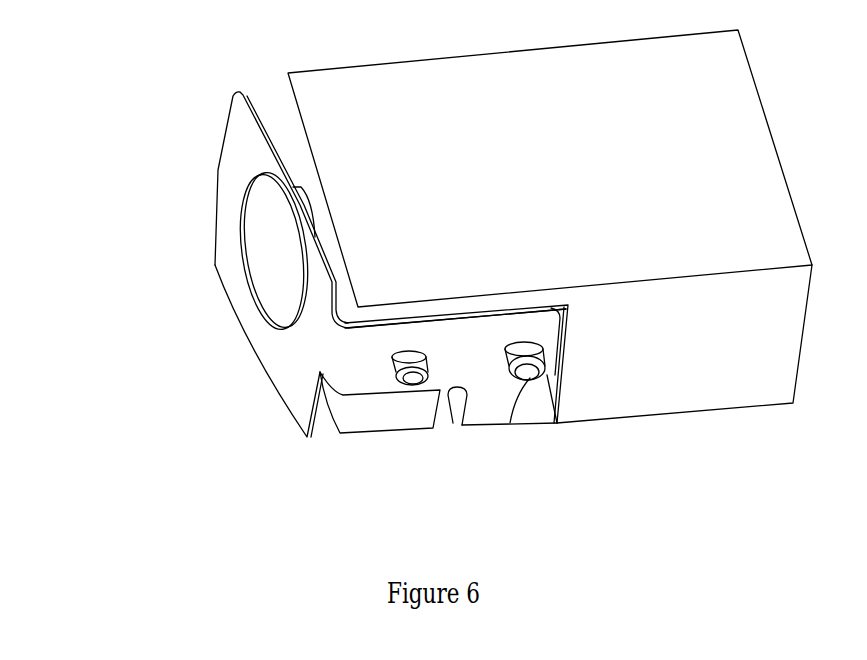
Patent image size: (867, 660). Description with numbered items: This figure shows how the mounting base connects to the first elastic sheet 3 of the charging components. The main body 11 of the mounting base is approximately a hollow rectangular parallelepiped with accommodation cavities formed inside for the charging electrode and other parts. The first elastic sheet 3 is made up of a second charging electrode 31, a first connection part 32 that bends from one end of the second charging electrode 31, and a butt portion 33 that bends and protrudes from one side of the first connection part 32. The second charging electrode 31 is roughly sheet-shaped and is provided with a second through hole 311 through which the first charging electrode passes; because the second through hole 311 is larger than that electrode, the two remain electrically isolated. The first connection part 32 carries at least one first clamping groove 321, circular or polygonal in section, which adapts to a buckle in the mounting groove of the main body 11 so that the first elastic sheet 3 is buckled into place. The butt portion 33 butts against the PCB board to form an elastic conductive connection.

The main body 11 is at (285, 170).
The first elastic sheet 3 is at (330, 325).
The second charging electrode 31 is at (299, 254).
The second through hole 311 is at (270, 250).
The first connection part 32 is at (470, 433).
The first clamping groove 321 is at (392, 368).
The butt portion 33 is at (440, 390).